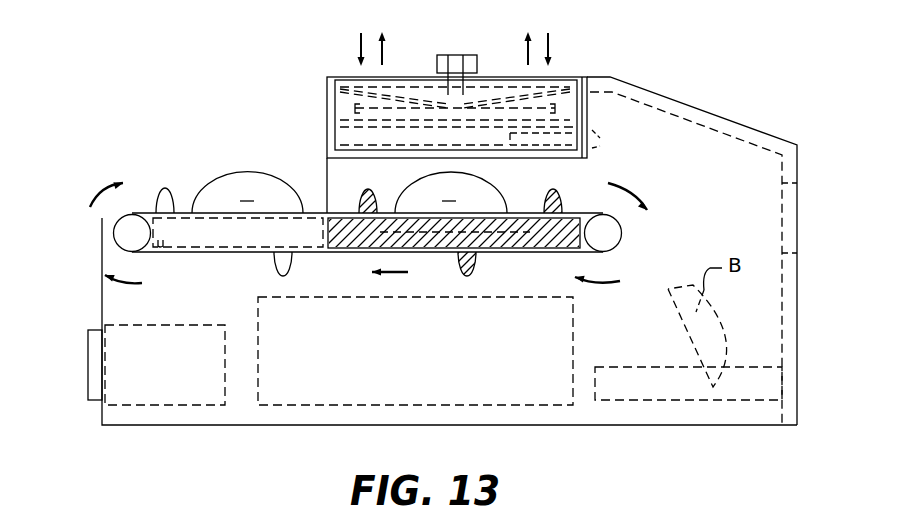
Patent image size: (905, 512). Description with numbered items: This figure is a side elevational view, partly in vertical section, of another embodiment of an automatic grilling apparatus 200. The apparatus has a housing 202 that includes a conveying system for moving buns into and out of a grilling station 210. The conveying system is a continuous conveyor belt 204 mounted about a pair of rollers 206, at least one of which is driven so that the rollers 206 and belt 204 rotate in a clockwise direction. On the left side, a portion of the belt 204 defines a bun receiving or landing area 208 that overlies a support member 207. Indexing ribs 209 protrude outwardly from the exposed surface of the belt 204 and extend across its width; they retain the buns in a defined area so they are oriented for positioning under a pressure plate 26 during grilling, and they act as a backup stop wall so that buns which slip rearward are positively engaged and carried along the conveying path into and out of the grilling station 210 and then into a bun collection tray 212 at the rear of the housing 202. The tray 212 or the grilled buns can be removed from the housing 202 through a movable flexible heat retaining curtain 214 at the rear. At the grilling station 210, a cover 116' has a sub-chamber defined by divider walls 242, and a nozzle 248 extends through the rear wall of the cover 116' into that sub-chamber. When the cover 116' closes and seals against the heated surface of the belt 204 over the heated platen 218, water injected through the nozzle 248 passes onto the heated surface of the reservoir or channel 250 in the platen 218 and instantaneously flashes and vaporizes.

The automatic grilling apparatus 200 is at (210, 83).
The cover 116' is at (484, 122).
The divider walls 242 is at (362, 135).
The pressure plate 26 is at (568, 107).
The housing 202 is at (722, 172).
The nozzle 248 is at (597, 152).
The reservoir or channel 250 is at (510, 200).
The indexing ribs 209 is at (165, 190).
The grilling station 210 is at (310, 168).
The rollers 206 is at (140, 233).
The support member 207 is at (152, 250).
The conveyor belt 204 is at (180, 252).
The bun receiving or landing area 208 is at (226, 222).
The heated platen 218 is at (345, 237).
The bun collection tray 212 is at (638, 383).
The heat retaining curtain 214 is at (800, 257).